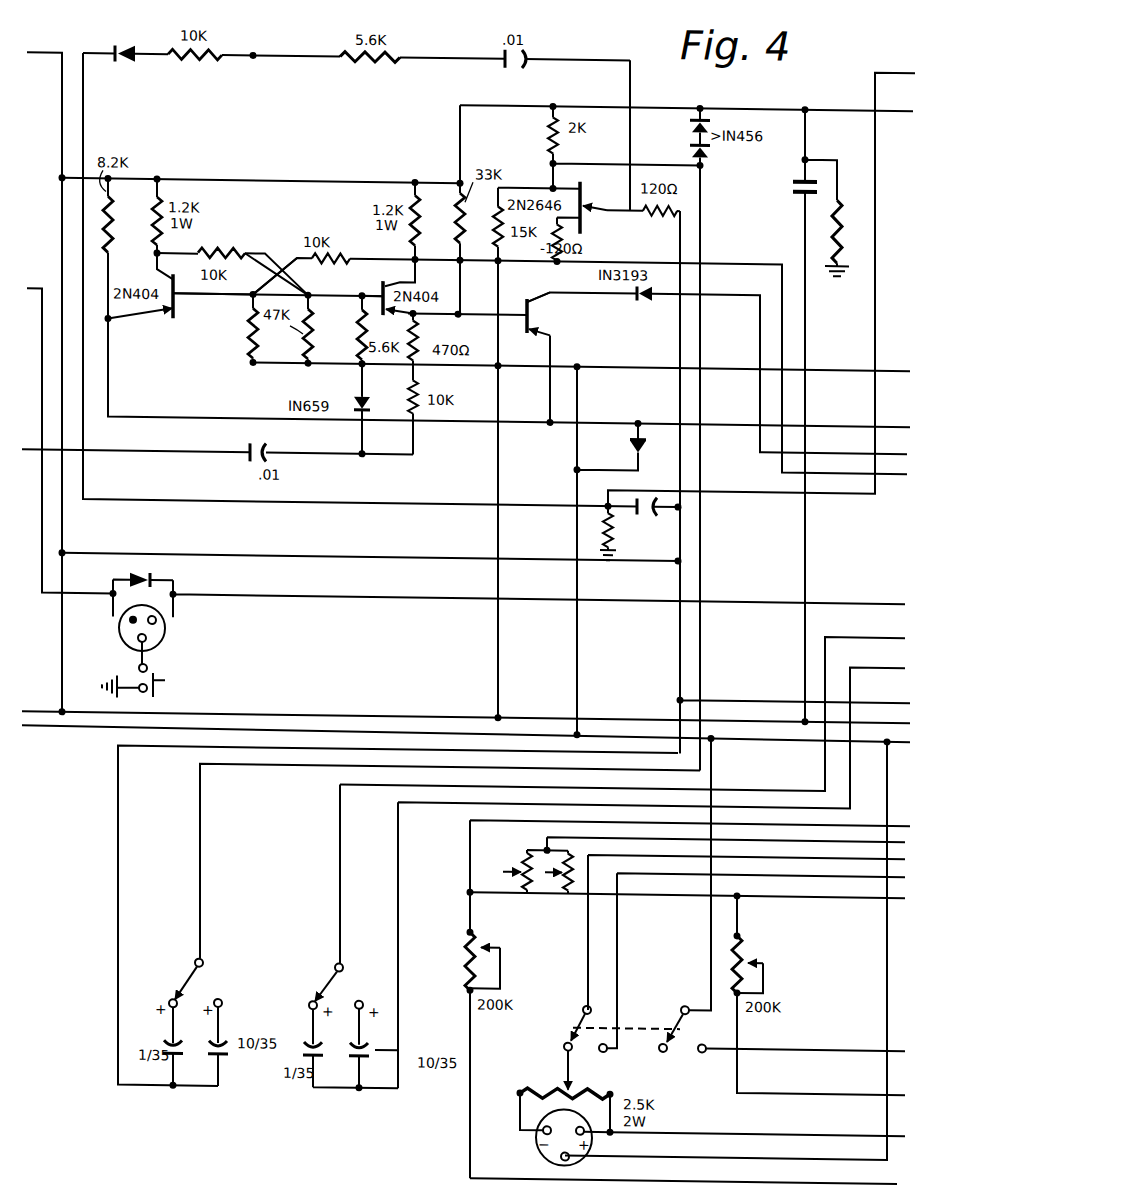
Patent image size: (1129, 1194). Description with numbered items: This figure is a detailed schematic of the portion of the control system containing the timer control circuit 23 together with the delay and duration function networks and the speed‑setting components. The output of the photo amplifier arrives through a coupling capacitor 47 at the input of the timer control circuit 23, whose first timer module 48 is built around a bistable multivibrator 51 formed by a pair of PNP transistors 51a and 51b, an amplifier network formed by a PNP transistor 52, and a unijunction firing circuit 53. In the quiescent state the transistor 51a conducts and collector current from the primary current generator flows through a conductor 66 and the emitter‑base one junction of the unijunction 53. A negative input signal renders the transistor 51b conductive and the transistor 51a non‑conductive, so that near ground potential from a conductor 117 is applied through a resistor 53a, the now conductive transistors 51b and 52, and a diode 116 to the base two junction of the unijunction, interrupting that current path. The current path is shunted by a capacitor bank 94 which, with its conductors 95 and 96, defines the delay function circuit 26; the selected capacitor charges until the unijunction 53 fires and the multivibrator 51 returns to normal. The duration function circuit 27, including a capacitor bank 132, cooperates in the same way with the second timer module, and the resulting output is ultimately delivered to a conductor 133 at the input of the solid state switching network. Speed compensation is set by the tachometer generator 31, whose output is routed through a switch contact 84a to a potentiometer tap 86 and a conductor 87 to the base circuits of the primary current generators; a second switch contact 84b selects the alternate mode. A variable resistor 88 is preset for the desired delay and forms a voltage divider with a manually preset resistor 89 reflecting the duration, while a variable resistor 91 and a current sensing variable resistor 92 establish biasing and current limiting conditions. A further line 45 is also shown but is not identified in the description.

The timer module 48 is at (320, 43).
The timer control circuit 23 is at (673, 68).
The bistable multivibrator 51 is at (260, 267).
The PNP transistor 51a is at (193, 328).
The PNP transistor 51b is at (380, 279).
The PNP transistor 52 is at (522, 330).
The unijunction firing circuit 53 is at (595, 192).
The resistor 53a is at (582, 224).
The conductor 66 is at (680, 394).
The diode 116 is at (628, 436).
The coupling capacitor 47 is at (242, 460).
The conductor 133 is at (333, 596).
The supply bus 45 is at (293, 709).
The conductor 117 is at (107, 727).
The conductor 96 is at (115, 861).
The conductor 95 is at (204, 862).
The capacitor bank 94 is at (198, 990).
The delay function circuit 26 is at (153, 1088).
The capacitor bank 132 is at (338, 1022).
The duration function circuit 27 is at (325, 1090).
The variable resistor 91 is at (510, 862).
The current sensing variable resistor 92 is at (558, 870).
The variable resistor 88 is at (463, 952).
The manually preset resistor 89 is at (746, 950).
The switch contact 84a is at (580, 1012).
The switch contact 84b is at (679, 999).
The potentiometer tap 86 is at (555, 1072).
The conductor 87 is at (795, 1123).
The tachometer generator 31 is at (543, 1145).